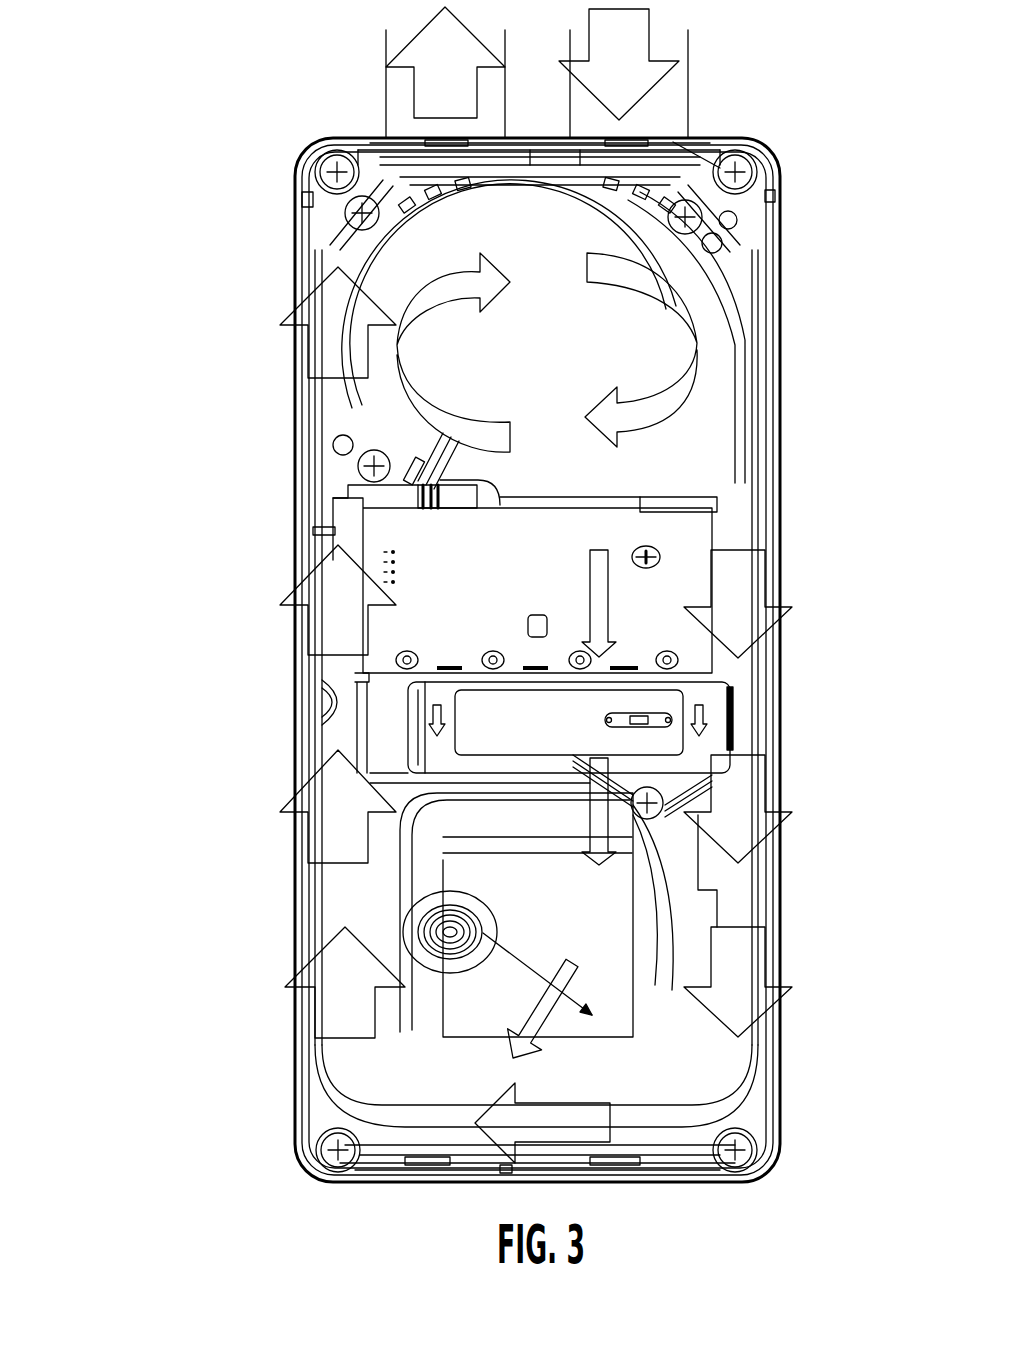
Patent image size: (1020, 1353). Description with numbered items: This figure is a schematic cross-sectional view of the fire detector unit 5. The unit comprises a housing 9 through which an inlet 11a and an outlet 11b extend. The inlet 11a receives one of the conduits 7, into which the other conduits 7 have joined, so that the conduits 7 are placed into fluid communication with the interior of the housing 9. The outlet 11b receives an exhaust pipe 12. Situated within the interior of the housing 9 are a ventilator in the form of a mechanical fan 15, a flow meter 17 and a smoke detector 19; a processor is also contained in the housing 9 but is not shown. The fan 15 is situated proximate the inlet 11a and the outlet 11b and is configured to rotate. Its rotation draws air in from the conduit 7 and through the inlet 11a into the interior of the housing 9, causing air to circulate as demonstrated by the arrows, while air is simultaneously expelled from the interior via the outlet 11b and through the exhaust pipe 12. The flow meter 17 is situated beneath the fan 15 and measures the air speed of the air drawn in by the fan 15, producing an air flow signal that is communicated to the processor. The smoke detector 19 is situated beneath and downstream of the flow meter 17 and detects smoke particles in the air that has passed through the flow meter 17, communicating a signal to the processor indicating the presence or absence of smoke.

The fire detector unit 5 is at (253, 835).
The conduit 7 is at (662, 117).
The housing 9 is at (368, 512).
The inlet 11a is at (763, 183).
The outlet 11b is at (350, 153).
The exhaust pipe 12 is at (386, 68).
The fan 15 is at (427, 337).
The flow meter 17 is at (477, 720).
The smoke detector 19 is at (430, 960).